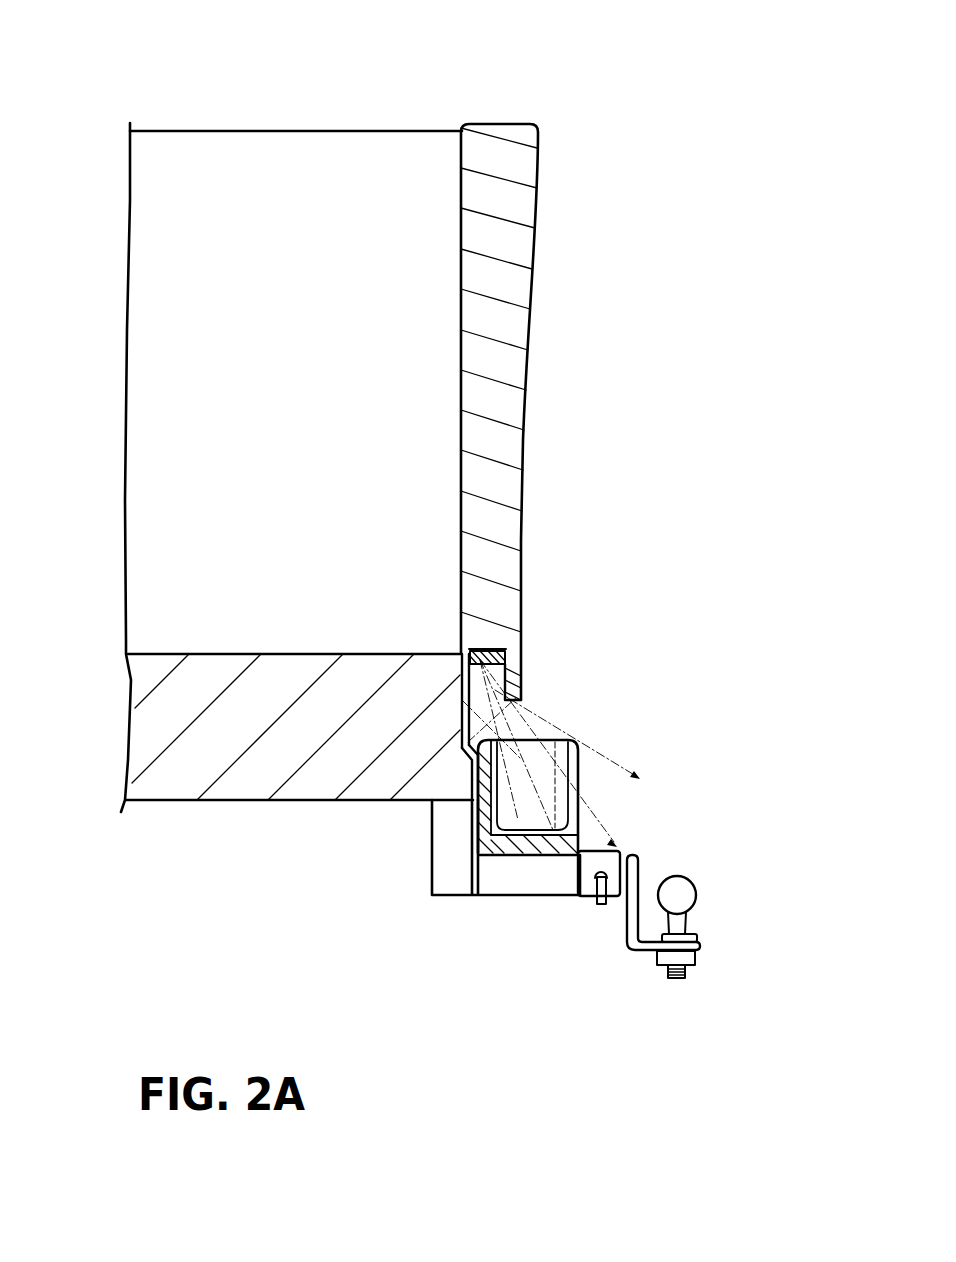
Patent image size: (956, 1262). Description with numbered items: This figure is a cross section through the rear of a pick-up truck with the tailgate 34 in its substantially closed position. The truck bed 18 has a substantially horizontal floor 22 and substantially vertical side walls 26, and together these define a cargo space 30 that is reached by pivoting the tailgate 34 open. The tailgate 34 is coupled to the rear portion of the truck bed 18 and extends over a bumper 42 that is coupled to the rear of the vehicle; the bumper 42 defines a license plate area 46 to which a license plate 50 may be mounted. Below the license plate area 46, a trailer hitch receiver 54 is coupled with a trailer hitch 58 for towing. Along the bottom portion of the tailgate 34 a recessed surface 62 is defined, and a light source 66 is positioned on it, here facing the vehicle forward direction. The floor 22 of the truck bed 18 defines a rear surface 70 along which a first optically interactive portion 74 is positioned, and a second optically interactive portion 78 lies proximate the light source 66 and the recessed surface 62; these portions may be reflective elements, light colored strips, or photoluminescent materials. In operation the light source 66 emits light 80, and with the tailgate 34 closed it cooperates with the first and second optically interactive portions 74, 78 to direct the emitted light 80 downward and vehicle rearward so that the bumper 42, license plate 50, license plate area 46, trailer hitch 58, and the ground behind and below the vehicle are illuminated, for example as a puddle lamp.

The truck bed 18 is at (357, 96).
The floor 22 is at (197, 775).
The side walls 26 is at (240, 286).
The cargo space 30 is at (265, 172).
The tailgate 34 is at (510, 152).
The bumper 42 is at (580, 753).
The license plate area 46 is at (580, 815).
The license plate 50 is at (503, 762).
The trailer hitch receiver 54 is at (495, 908).
The trailer hitch 58 is at (634, 964).
The recessed surface 62 is at (508, 686).
The light source 66 is at (490, 653).
The rear surface 70 is at (460, 702).
The first optically interactive portion 74 is at (462, 748).
The second optically interactive portion 78 is at (478, 649).
The emitted light 80 is at (625, 848).